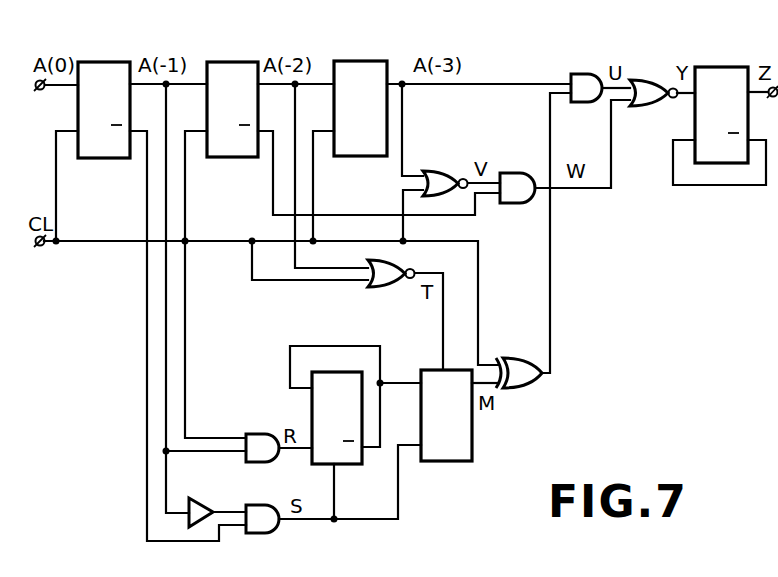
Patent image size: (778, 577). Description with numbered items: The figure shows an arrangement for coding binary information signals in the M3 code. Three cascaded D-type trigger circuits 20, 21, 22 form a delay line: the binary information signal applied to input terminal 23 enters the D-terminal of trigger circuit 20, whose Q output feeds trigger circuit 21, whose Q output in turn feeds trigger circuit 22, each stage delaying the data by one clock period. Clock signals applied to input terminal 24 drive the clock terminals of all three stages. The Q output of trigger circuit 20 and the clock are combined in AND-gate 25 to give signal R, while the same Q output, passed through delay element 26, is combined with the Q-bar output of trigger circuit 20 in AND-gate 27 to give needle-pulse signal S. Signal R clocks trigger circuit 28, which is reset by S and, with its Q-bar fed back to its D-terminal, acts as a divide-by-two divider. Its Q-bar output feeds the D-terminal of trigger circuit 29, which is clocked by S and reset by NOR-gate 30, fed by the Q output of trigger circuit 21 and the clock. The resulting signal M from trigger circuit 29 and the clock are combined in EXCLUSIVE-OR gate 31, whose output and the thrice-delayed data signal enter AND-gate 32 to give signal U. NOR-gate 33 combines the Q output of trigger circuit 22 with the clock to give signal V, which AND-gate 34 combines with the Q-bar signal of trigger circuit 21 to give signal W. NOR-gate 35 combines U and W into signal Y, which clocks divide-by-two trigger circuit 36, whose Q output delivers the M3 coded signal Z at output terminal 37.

The D-type trigger circuit 20 is at (112, 62).
The D-type trigger circuit 21 is at (234, 62).
The D-type trigger circuit 22 is at (359, 61).
The input terminal 23 is at (41, 90).
The input terminal 24 is at (44, 247).
The AND-gate 25 is at (259, 434).
The delay element 26 is at (203, 498).
The AND-gate 27 is at (275, 532).
The D-type trigger circuit 28 is at (350, 464).
The D-type trigger circuit 29 is at (440, 461).
The NOR-gate 30 is at (386, 288).
The EXCLUSIVE-OR gate 31 is at (532, 388).
The AND-gate 32 is at (585, 74).
The NOR-gate 33 is at (443, 171).
The AND-gate 34 is at (515, 173).
The NOR-gate 35 is at (650, 80).
The D-type trigger circuit 36 is at (718, 67).
The output terminal 37 is at (771, 97).